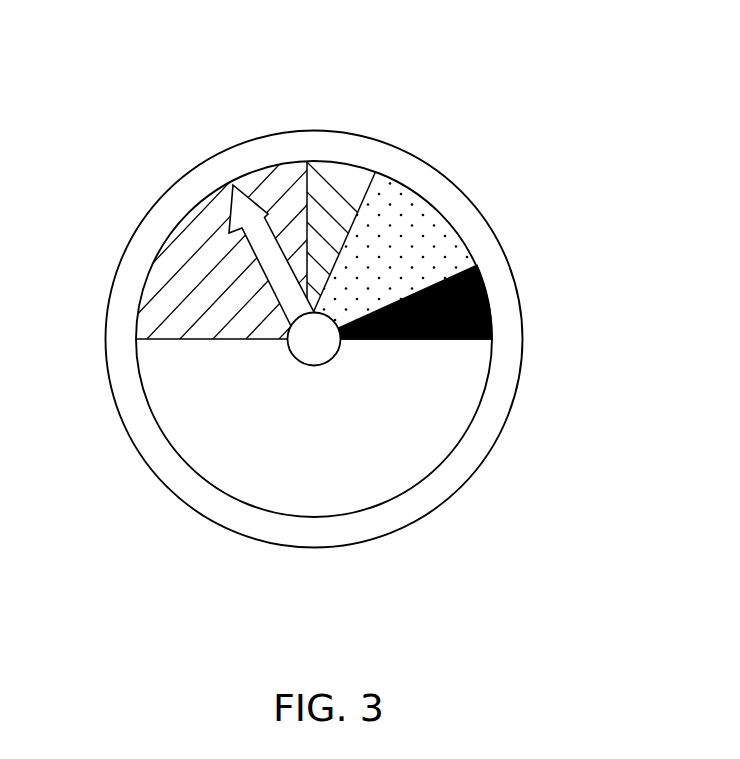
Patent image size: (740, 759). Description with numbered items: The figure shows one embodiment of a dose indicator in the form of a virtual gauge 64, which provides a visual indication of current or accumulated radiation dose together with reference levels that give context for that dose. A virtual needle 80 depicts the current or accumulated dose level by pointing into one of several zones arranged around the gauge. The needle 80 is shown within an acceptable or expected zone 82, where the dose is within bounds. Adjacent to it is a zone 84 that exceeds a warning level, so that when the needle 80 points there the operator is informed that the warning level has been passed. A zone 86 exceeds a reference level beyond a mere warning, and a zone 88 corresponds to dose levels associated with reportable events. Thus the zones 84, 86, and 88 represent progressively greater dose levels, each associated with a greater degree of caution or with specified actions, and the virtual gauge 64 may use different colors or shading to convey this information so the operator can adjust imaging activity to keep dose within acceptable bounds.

The virtual gauge 64 is at (487, 533).
The virtual needle 80 is at (257, 193).
The acceptable or expected zone 82 is at (168, 233).
The zone exceeding a warning level 84 is at (345, 160).
The zone exceeding a reference level 86 is at (441, 212).
The zone of reportable events 88 is at (488, 303).